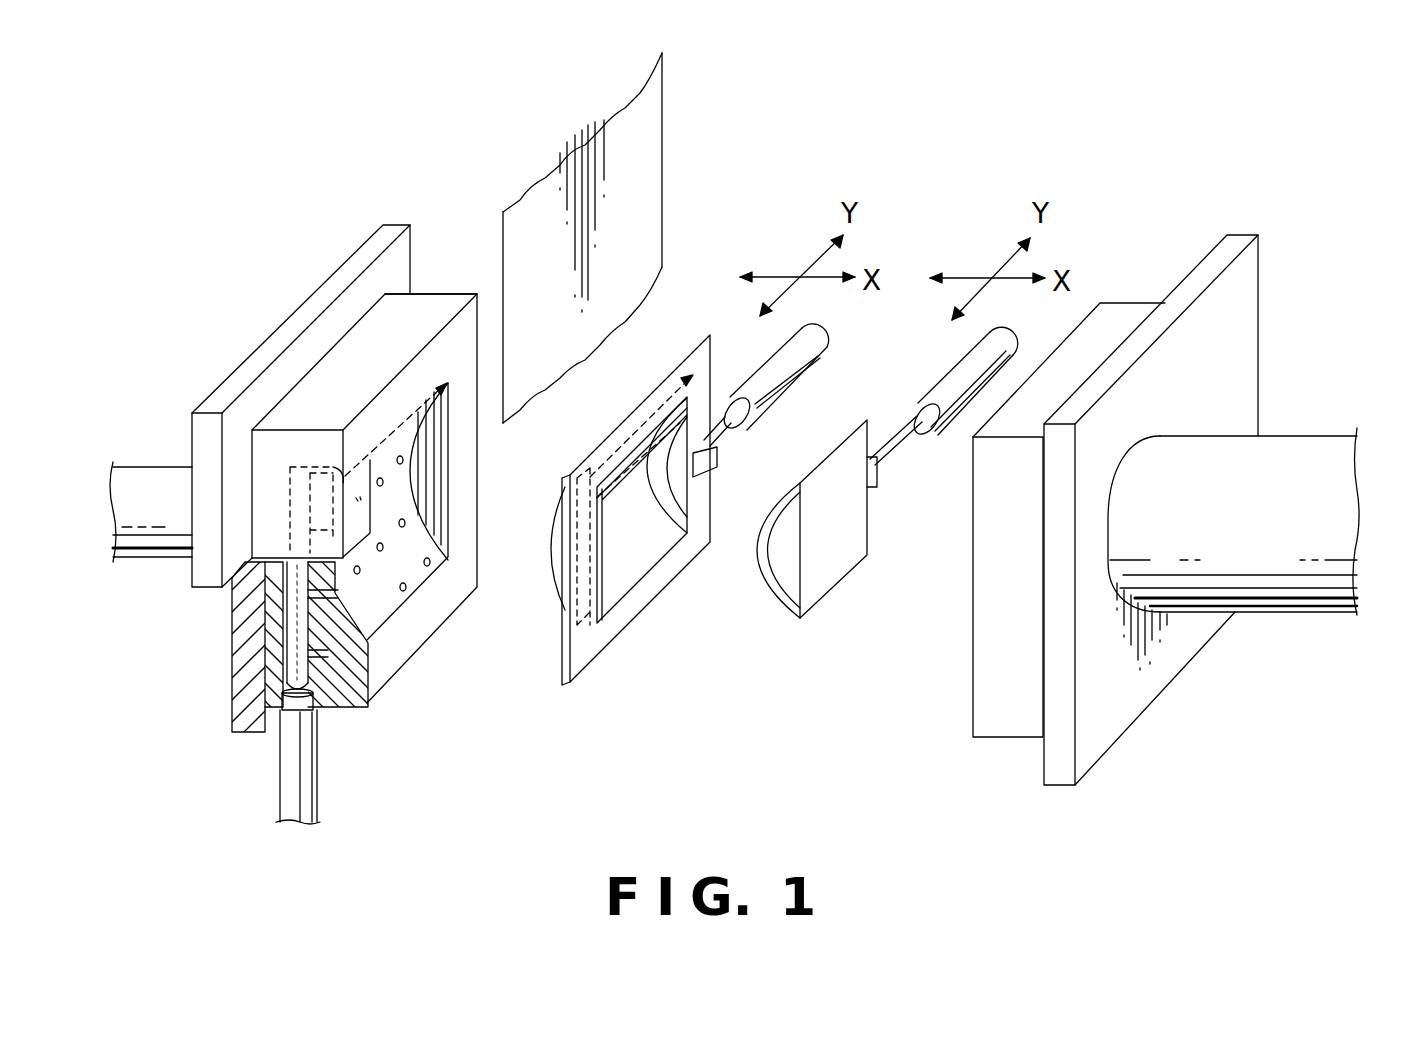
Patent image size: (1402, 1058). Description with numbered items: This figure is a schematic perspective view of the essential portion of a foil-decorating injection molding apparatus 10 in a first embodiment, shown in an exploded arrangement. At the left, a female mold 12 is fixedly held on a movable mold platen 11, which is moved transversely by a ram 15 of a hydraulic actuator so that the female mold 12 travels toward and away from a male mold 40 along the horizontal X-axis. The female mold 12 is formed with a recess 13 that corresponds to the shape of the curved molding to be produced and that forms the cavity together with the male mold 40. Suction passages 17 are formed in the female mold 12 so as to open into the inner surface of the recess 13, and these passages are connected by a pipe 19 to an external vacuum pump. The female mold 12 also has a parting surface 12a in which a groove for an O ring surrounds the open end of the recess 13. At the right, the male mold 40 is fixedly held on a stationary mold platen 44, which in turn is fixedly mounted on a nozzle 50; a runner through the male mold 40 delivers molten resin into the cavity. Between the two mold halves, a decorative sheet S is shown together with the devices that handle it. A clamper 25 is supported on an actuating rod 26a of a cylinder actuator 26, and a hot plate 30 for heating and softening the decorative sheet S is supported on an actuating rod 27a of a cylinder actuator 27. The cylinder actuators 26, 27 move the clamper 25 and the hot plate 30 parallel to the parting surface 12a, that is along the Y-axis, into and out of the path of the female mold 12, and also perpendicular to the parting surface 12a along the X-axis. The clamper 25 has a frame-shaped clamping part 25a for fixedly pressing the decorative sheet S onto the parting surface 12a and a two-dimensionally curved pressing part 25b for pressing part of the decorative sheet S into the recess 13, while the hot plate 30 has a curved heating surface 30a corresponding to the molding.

The foil-decorating injection molding apparatus 10 is at (325, 206).
The movable mold platen 11 is at (283, 342).
The female mold 12 is at (393, 642).
The parting surface 12a is at (445, 352).
The recess 13 is at (405, 565).
The ram 15 is at (143, 553).
The suction passages 17 is at (297, 622).
The pipe 19 is at (317, 767).
The clamper 25 is at (598, 660).
The frame-shaped clamping part 25a is at (633, 600).
The two-dimensionally curved pressing part 25b is at (552, 540).
The cylinder actuator 26 is at (823, 348).
The actuating rod 26a is at (731, 437).
The cylinder actuator 27 is at (957, 372).
The actuating rod 27a is at (893, 453).
The hot plate 30 is at (840, 553).
The curved heating surface 30a is at (757, 553).
The male mold 40 is at (985, 672).
The stationary mold platen 44 is at (1152, 678).
The nozzle 50 is at (1285, 603).
The decorative sheet S is at (647, 158).